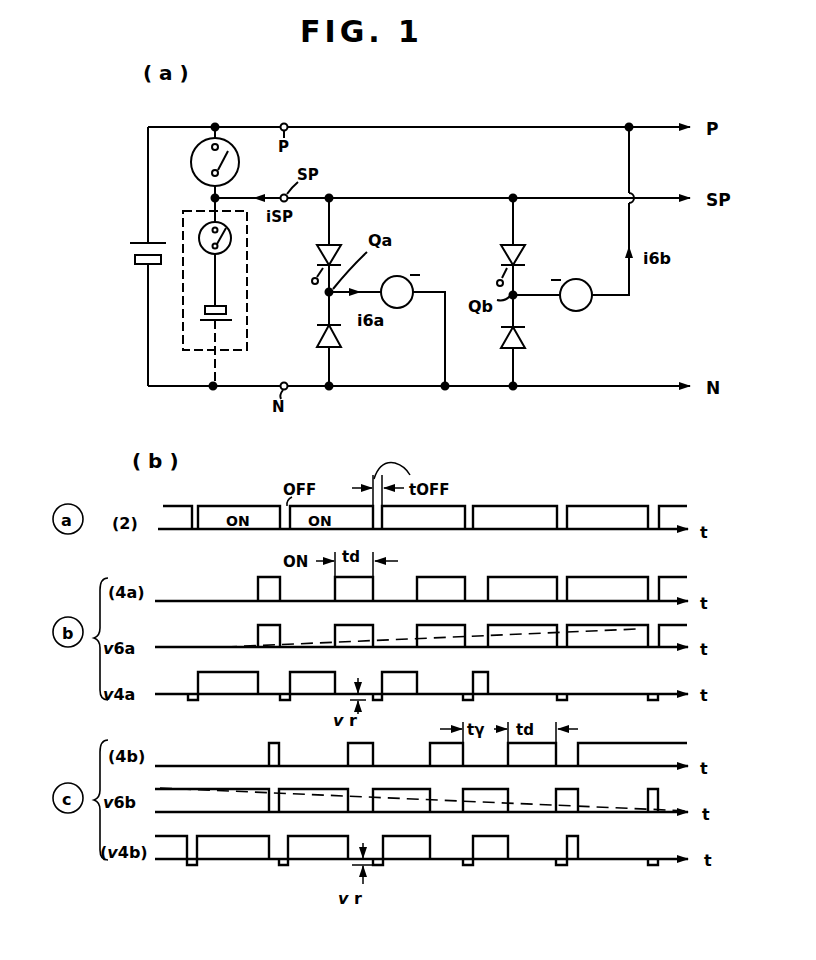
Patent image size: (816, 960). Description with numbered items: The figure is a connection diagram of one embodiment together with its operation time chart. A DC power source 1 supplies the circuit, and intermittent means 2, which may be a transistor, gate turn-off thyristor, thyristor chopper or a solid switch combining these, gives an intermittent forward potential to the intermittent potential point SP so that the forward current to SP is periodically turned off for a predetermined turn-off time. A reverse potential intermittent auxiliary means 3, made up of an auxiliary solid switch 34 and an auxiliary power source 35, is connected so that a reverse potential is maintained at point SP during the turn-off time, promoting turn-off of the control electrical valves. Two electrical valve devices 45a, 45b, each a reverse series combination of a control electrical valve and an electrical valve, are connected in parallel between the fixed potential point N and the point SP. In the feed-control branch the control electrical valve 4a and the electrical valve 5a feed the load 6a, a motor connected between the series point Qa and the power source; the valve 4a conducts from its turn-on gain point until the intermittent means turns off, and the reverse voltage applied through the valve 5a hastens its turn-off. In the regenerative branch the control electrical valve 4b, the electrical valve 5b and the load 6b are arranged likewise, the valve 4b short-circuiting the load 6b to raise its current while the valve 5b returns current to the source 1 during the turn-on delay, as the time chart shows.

The DC power source 1 is at (132, 256).
The intermittent means 2 is at (233, 180).
The reverse potential intermittent auxiliary means 3 is at (183, 310).
The auxiliary solid switch 34 is at (200, 251).
The auxiliary power source 35 is at (201, 317).
The control electrical valve 4a is at (317, 255).
The electrical valve 5a is at (317, 333).
The load 6a is at (397, 275).
The electrical valve device 45a is at (310, 322).
The control electrical valve 4b is at (525, 262).
The electrical valve 5b is at (525, 333).
The load 6b is at (573, 219).
The electrical valve device 45b is at (543, 183).